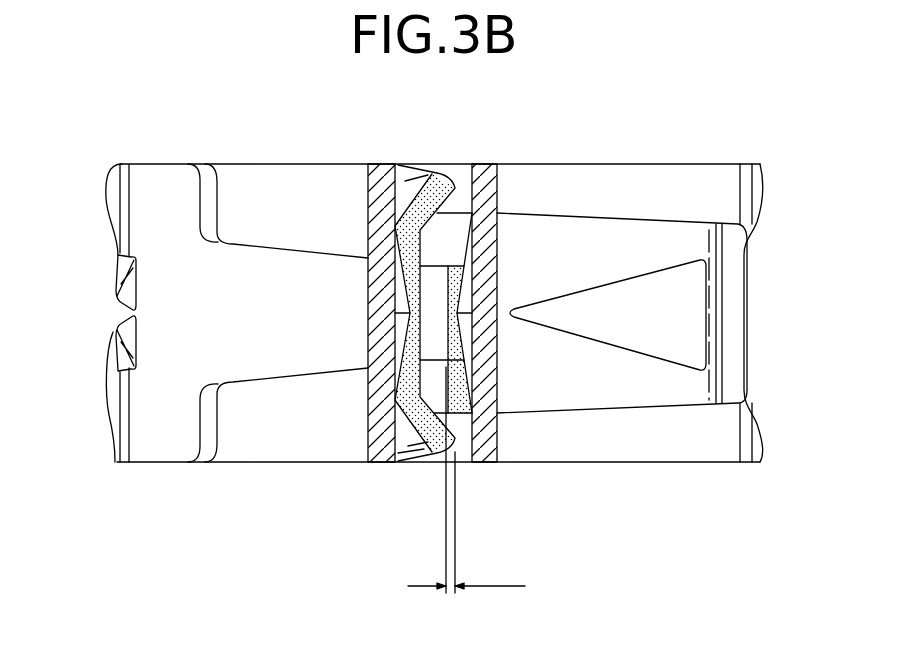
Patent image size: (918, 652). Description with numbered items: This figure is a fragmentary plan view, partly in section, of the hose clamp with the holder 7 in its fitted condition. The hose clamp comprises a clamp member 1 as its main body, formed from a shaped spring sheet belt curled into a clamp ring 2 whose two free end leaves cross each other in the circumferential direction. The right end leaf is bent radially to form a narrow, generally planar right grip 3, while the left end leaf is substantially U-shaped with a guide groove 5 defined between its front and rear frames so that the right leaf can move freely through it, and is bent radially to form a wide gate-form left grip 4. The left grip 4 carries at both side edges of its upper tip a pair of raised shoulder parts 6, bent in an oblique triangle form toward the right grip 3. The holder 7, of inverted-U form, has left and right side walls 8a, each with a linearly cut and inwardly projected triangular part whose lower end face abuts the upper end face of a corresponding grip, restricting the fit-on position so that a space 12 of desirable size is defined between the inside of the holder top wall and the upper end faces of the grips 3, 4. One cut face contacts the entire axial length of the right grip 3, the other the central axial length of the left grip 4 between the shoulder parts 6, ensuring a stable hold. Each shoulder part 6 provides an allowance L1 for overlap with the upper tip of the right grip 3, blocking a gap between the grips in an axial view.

The clamp member 1 is at (650, 147).
The clamp ring 2 is at (163, 450).
The right grip 3 is at (457, 283).
The left grip 4 is at (395, 264).
The guide groove 5 is at (626, 382).
The raised shoulder parts 6 is at (447, 182).
The holder 7 is at (365, 203).
The side walls 8a is at (366, 422).
The space 12 is at (454, 385).
The allowance L1 is at (466, 522).